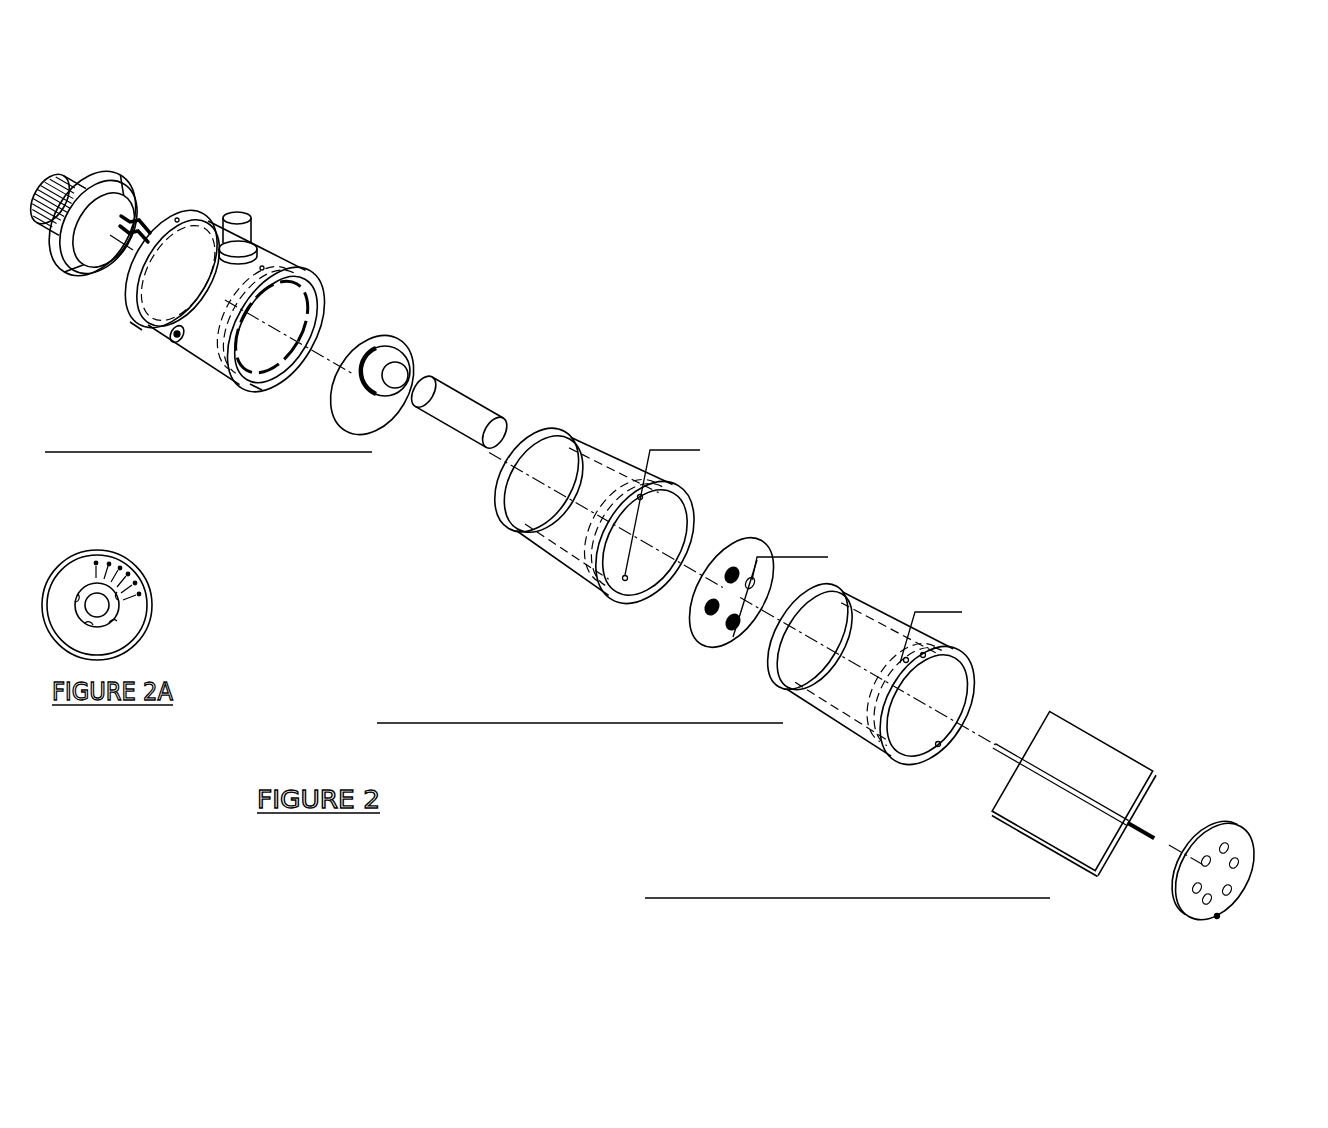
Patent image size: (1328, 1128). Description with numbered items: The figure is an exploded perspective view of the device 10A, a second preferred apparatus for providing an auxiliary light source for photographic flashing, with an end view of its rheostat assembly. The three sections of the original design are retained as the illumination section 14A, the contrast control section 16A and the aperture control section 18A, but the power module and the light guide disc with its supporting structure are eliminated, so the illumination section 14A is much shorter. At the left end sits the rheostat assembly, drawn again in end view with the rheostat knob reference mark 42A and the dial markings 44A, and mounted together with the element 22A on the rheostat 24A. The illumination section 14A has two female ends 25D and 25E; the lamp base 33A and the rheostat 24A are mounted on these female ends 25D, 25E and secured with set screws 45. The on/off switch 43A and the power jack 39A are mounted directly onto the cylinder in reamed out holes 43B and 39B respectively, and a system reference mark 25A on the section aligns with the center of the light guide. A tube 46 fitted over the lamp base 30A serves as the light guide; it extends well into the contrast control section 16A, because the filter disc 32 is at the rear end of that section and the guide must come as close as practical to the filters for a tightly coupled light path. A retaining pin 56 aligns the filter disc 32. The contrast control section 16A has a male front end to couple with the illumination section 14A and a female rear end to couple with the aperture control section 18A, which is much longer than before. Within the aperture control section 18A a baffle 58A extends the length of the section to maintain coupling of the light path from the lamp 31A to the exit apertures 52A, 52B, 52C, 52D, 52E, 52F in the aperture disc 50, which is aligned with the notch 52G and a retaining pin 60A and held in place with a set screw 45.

In FIG. 2, the device 10A is at (672, 521).
In FIG. 2, the illumination section 14A is at (509, 375).
In FIG. 2, the contrast control section 16A is at (718, 559).
In FIG. 2, the aperture control section 18A is at (983, 746).
In FIG. 2, the rheostat knob reference mark 42A is at (271, 163).
In FIG. 2A, the rheostat knob reference mark 42A is at (141, 564).
In FIG. 2, the illumination intensity indicia 44A is at (281, 200).
In FIG. 2A, the illumination intensity indicia 44A is at (151, 563).
In FIG. 2, the rheostat 24A is at (133, 214).
In FIG. 2, the lamp housing front face 22A is at (148, 217).
In FIG. 2, the set screws 45 is at (178, 219).
In FIG. 2, the on/off switch 43A is at (271, 213).
In FIG. 2, the reamed out hole 43B is at (269, 235).
In FIG. 2, the system reference mark 25A is at (246, 312).
In FIG. 2, the female end 25D is at (102, 337).
In FIG. 2, the female end 25E is at (163, 400).
In FIG. 2, the power jack 39A is at (125, 348).
In FIG. 2, the reamed out hole 39B is at (124, 363).
In FIG. 2, the lamp base 33A is at (399, 358).
In FIG. 2, the lamp base 30A is at (422, 342).
In FIG. 2, the lamp 31A is at (433, 348).
In FIG. 2, the tube 46 is at (478, 409).
In FIG. 2, the retaining pin 56 is at (606, 519).
In FIG. 2, the filter disc 32 is at (765, 584).
In FIG. 2, the retaining pin 60A is at (870, 671).
In FIG. 2, the baffle 58A is at (1098, 806).
In FIG. 2, the aperture disc 50 is at (1213, 848).
In FIG. 2, the exit aperture 52A is at (1154, 873).
In FIG. 2, the exit aperture 52B is at (1150, 898).
In FIG. 2, the exit aperture 52C is at (1155, 913).
In FIG. 2, the exit aperture 52D is at (1271, 900).
In FIG. 2, the exit aperture 52E is at (1273, 877).
In FIG. 2, the exit aperture 52F is at (1229, 851).
In FIG. 2, the notch 52G is at (1250, 932).